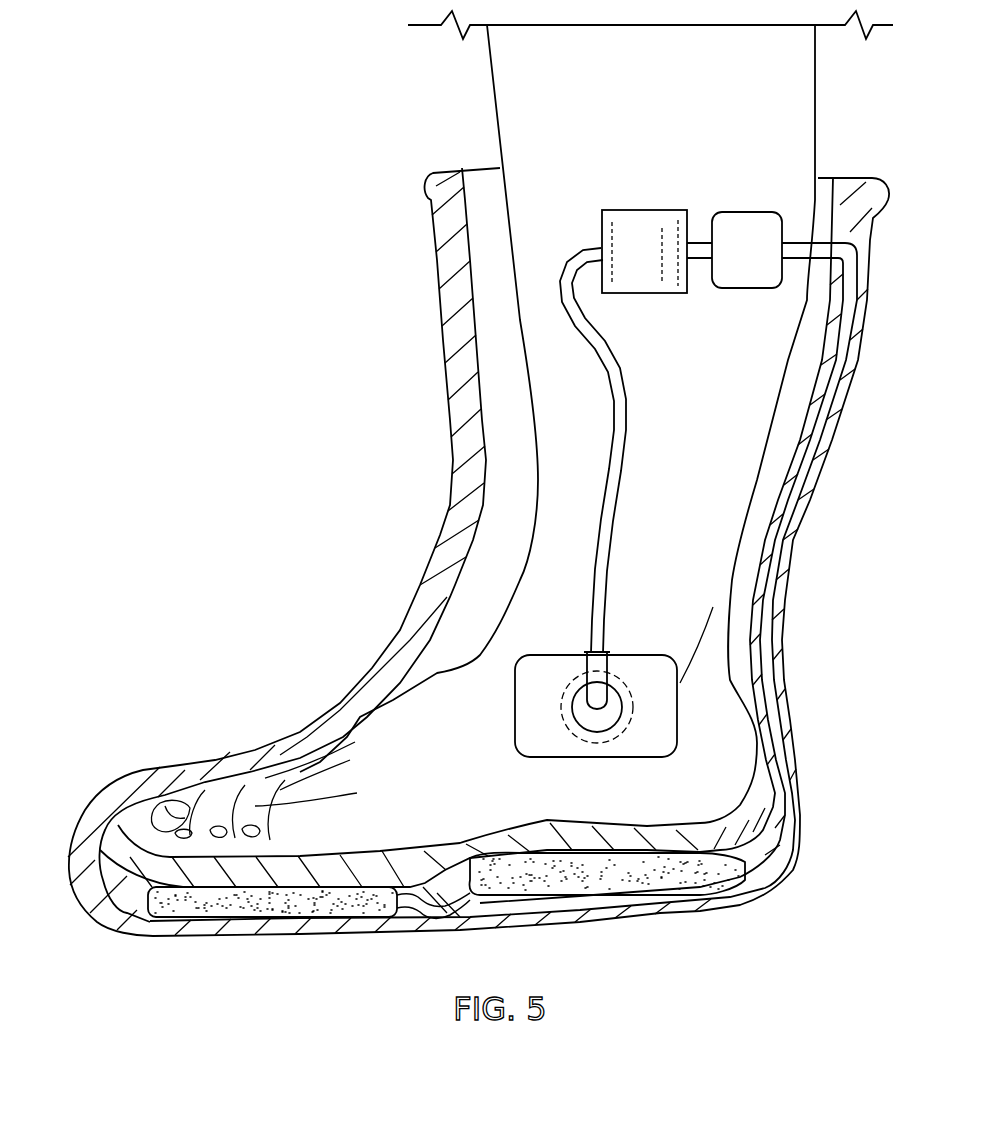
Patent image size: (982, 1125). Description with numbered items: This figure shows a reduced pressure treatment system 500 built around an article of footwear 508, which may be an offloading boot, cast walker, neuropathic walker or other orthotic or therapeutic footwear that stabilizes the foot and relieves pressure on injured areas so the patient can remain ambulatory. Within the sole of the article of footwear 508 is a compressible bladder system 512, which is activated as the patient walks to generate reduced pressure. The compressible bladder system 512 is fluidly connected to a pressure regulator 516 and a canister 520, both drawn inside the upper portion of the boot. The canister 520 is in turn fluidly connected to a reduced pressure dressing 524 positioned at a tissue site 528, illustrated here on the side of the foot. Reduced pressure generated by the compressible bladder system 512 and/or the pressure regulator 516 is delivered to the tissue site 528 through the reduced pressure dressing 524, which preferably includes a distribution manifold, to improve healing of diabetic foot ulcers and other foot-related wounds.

The reduced pressure treatment system 500 is at (393, 150).
The article of footwear 508 is at (440, 298).
The compressible bladder system 512 is at (298, 905).
The pressure regulator 516 is at (745, 212).
The canister 520 is at (645, 210).
The reduced pressure dressing 524 is at (628, 652).
The tissue site 528 is at (560, 712).